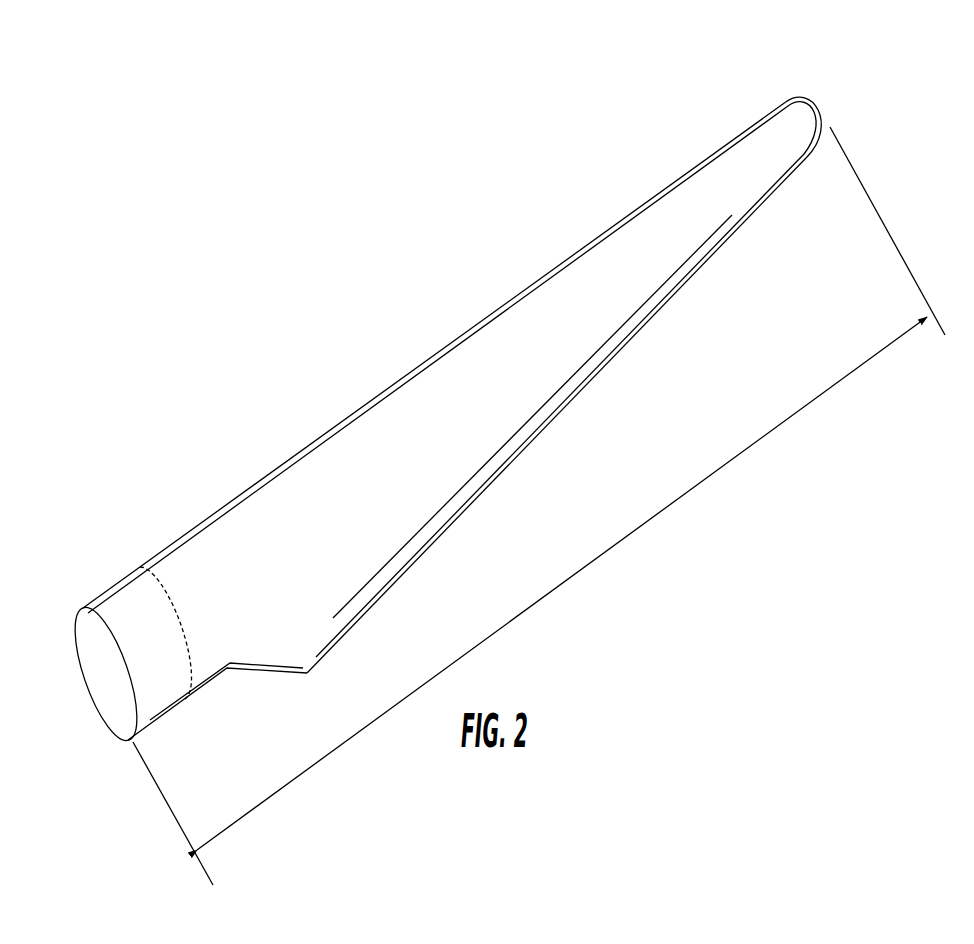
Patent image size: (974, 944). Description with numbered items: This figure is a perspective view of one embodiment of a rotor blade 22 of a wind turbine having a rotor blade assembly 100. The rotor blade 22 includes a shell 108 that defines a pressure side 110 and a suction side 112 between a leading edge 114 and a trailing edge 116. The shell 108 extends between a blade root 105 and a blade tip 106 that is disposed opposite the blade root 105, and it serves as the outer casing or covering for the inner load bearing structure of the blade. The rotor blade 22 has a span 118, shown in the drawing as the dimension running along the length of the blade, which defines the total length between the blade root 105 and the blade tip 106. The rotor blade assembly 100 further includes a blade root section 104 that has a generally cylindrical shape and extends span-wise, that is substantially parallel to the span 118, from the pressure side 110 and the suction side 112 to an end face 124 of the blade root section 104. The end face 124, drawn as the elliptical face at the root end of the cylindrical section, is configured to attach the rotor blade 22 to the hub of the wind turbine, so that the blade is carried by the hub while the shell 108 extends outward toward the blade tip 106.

The rotor blade 22 is at (397, 320).
The rotor blade assembly 100 is at (117, 563).
The blade root section 104 is at (87, 602).
The blade root 105 is at (86, 680).
The end face 124 is at (117, 710).
The blade tip 106 is at (817, 98).
The shell 108 is at (360, 603).
The pressure side 110 is at (405, 525).
The suction side 112 is at (315, 480).
The leading edge 114 is at (390, 387).
The trailing edge 116 is at (497, 477).
The span 118 is at (590, 563).